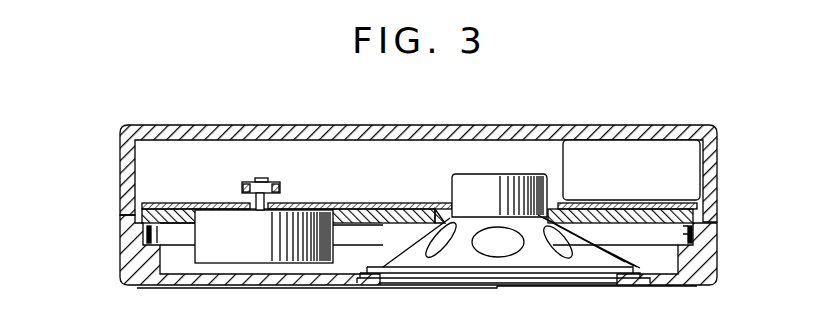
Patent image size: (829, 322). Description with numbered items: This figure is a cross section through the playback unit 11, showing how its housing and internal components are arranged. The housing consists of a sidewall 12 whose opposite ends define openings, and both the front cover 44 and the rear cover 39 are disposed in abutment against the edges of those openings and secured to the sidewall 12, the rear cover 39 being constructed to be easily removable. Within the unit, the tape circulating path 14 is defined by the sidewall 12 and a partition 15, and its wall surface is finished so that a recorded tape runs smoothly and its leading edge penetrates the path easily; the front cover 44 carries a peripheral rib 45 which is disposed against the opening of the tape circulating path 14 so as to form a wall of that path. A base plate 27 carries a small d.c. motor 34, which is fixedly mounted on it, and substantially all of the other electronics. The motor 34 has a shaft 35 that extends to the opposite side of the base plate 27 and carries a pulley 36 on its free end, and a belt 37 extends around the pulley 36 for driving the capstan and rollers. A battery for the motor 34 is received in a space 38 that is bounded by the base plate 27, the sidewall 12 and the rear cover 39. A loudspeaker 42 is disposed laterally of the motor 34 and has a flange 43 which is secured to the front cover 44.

The playback unit 11 is at (561, 113).
The sidewall 12 is at (717, 183).
The tape circulating path 14 is at (717, 229).
The partition 15 is at (607, 226).
The base plate 27 is at (390, 203).
The motor 34 is at (260, 256).
The shaft 35 is at (268, 200).
The pulley 36 is at (254, 181).
The belt 37 is at (245, 190).
The space 38 is at (643, 150).
The rear cover 39 is at (458, 125).
The loudspeaker 42 is at (551, 258).
The flange 43 is at (440, 268).
The front cover 44 is at (330, 284).
The peripheral rib 45 is at (135, 216).